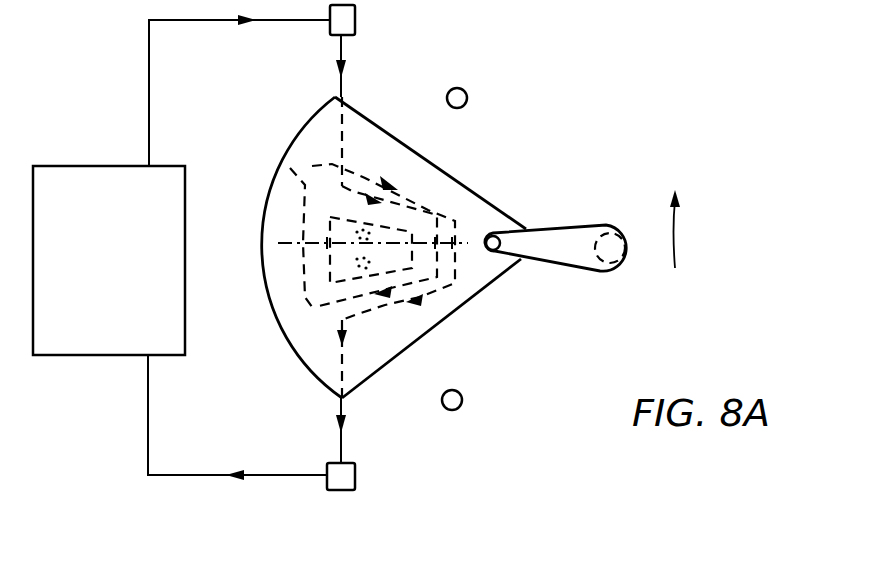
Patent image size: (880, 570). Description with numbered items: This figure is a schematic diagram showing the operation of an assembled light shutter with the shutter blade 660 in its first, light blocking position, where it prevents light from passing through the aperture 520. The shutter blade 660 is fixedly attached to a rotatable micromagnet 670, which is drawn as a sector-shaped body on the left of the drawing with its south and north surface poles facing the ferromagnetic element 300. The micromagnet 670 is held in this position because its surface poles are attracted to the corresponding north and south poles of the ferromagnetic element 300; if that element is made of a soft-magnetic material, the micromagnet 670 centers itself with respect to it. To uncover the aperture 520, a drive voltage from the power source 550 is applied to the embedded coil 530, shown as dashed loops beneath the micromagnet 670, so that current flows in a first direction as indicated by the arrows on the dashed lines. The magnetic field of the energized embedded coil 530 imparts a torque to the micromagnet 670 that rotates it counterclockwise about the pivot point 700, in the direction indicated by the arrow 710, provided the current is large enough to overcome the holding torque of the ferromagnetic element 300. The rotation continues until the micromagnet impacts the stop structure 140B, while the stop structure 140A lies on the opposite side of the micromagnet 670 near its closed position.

The power source 550 is at (103, 165).
The ferromagnetic element 300 is at (287, 161).
The embedded coil 530 is at (415, 192).
The micromagnet 670 is at (378, 360).
The shutter blade 660 is at (584, 257).
The aperture 520 is at (605, 224).
The pivot point 700 is at (498, 250).
The arrow 710 is at (678, 232).
The stop structure 140A is at (466, 92).
The stop structure 140B is at (463, 400).